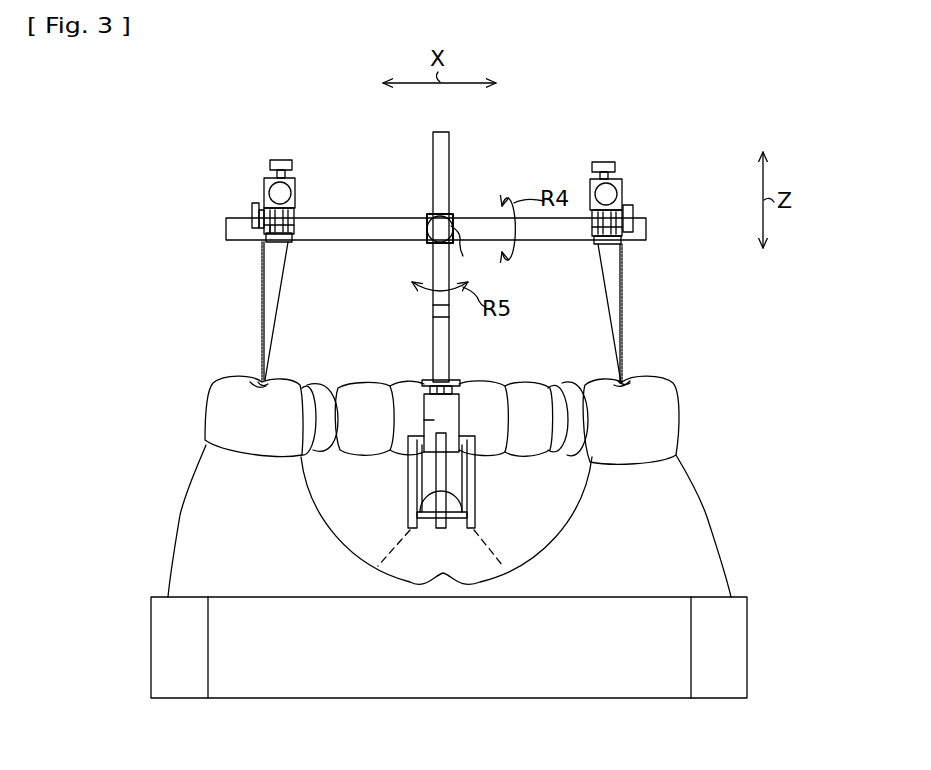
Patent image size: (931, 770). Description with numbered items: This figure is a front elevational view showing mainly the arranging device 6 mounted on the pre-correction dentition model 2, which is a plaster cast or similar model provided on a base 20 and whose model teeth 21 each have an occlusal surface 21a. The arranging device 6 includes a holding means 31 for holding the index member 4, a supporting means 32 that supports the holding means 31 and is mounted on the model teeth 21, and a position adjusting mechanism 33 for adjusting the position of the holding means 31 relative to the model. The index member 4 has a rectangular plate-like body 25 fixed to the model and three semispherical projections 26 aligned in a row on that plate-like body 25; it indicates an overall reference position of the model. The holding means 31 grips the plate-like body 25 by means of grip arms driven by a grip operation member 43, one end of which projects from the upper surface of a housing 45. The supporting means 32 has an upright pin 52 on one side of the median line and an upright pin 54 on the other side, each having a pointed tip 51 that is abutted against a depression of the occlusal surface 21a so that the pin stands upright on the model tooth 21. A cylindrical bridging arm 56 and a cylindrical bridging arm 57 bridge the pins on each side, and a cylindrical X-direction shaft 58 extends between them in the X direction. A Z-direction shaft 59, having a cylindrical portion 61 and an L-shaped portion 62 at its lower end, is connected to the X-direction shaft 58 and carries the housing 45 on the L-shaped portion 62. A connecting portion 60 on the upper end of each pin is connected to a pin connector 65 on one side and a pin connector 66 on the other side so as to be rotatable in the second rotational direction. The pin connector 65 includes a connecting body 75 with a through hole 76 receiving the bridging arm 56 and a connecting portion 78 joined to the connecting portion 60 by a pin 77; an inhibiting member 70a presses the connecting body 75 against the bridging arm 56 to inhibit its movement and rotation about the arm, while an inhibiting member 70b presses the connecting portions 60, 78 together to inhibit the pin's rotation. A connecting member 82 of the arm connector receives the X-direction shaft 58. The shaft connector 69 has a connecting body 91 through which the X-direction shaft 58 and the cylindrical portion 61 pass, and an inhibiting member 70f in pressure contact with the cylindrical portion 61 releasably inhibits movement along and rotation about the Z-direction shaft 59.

The pre-correction dentition model 2 is at (429, 478).
The index member 4 is at (448, 499).
The arranging device 6 is at (444, 239).
The base 20 is at (440, 682).
The model teeth 21 is at (208, 420).
The occlusal surface 21a is at (253, 382).
The plate-like body 25 is at (468, 516).
The projections 26 is at (456, 497).
The holding means 31 is at (425, 396).
The supporting means 32 is at (227, 311).
The position adjusting mechanism 33 is at (258, 242).
The grip operation member 43 is at (460, 382).
The housing 45 is at (430, 418).
The tip 51 is at (262, 385).
The upright pin 52 is at (262, 336).
The upright pin 54 is at (622, 292).
The bridging arm 56 is at (291, 193).
The bridging arm 57 is at (598, 186).
The X-direction shaft 58 is at (383, 240).
The Z-direction shaft 59 is at (448, 257).
The connecting portion 60 is at (278, 300).
The cylindrical portion 61 is at (448, 257).
The L-shaped portion 62 is at (434, 160).
The pin connector 65 is at (258, 242).
The pin connector 66 is at (607, 264).
The shaft connector 69 is at (463, 206).
The inhibiting member 70a is at (282, 160).
The inhibiting member 70b is at (252, 206).
The inhibiting member 70f is at (471, 251).
The connecting body 75 is at (286, 172).
The through hole 76 is at (294, 212).
The pin 77 is at (268, 240).
The connecting portion 78 is at (290, 232).
The connecting member 82 is at (600, 252).
The connecting body 91 is at (451, 221).